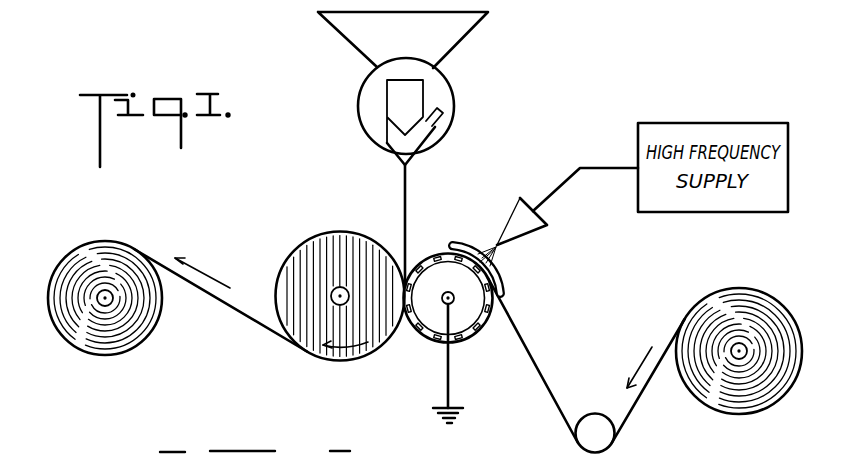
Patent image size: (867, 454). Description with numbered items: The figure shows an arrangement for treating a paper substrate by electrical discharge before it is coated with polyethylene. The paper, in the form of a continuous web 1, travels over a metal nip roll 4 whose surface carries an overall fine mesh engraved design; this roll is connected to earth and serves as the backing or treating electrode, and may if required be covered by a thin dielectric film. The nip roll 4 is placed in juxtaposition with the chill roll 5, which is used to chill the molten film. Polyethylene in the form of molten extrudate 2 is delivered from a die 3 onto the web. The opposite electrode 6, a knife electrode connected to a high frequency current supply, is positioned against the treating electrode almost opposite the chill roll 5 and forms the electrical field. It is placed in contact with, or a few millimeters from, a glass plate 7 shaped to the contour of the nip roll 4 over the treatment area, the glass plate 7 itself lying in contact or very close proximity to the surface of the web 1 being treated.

The continuous web 1 is at (670, 328).
The molten extrudate 2 is at (408, 198).
The die 3 is at (441, 70).
The nip roll 4 is at (427, 345).
The chill roll 5 is at (318, 232).
The opposite electrode 6 is at (520, 198).
The glass plate 7 is at (517, 292).